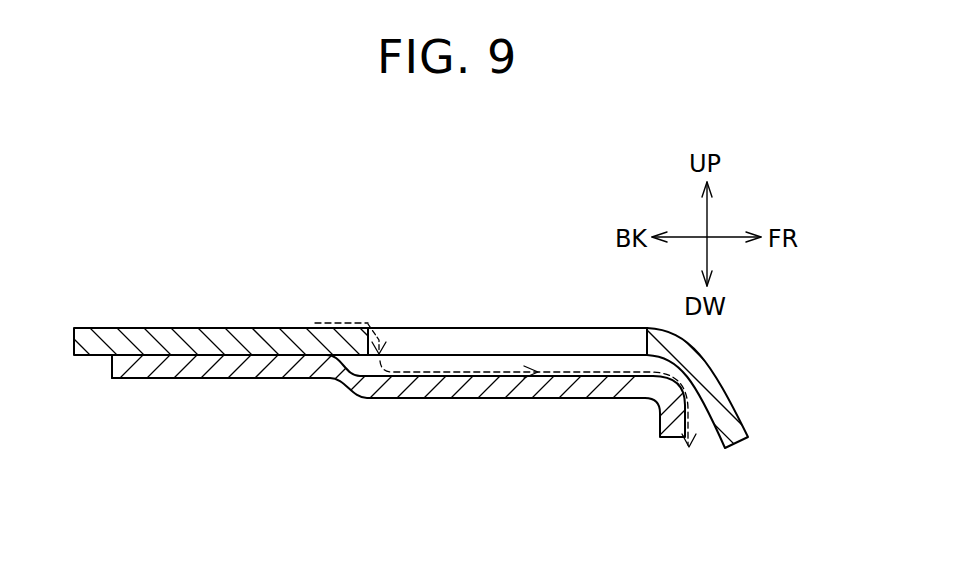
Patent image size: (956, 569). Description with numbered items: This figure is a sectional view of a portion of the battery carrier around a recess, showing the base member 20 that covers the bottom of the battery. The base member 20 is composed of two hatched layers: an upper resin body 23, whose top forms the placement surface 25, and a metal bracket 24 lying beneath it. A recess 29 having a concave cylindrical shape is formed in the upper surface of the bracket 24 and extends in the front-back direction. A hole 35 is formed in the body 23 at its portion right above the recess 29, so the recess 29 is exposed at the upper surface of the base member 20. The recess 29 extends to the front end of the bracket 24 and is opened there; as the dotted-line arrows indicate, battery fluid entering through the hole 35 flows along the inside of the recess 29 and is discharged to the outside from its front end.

The base member 20 is at (258, 441).
The body 23 is at (190, 341).
The bracket 24 is at (253, 368).
The placement surface 25 is at (232, 327).
The recess 29 is at (487, 373).
The hole 35 is at (547, 343).